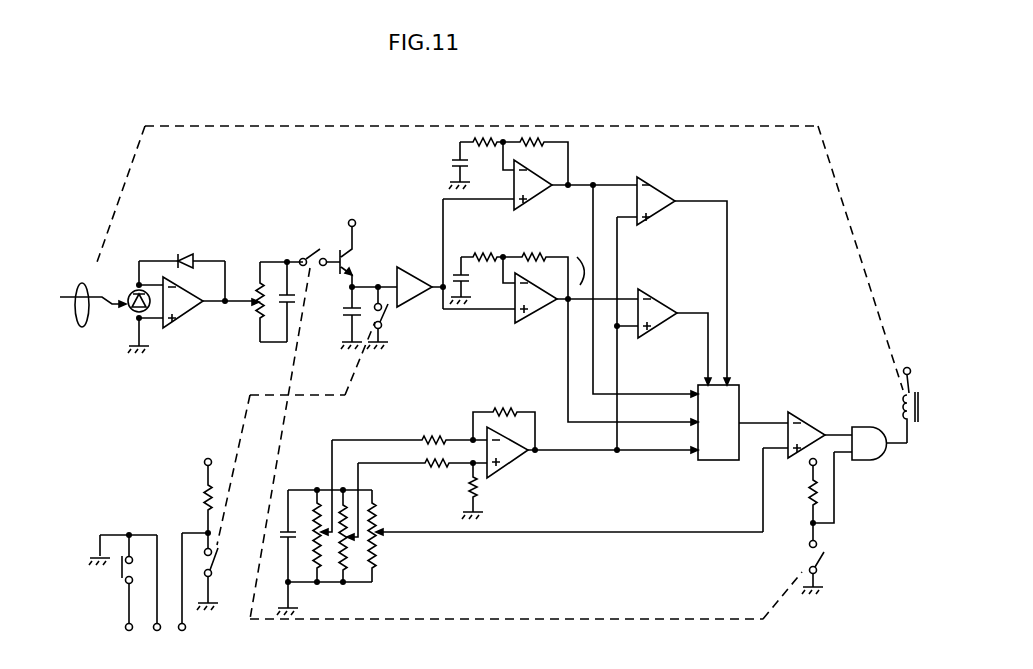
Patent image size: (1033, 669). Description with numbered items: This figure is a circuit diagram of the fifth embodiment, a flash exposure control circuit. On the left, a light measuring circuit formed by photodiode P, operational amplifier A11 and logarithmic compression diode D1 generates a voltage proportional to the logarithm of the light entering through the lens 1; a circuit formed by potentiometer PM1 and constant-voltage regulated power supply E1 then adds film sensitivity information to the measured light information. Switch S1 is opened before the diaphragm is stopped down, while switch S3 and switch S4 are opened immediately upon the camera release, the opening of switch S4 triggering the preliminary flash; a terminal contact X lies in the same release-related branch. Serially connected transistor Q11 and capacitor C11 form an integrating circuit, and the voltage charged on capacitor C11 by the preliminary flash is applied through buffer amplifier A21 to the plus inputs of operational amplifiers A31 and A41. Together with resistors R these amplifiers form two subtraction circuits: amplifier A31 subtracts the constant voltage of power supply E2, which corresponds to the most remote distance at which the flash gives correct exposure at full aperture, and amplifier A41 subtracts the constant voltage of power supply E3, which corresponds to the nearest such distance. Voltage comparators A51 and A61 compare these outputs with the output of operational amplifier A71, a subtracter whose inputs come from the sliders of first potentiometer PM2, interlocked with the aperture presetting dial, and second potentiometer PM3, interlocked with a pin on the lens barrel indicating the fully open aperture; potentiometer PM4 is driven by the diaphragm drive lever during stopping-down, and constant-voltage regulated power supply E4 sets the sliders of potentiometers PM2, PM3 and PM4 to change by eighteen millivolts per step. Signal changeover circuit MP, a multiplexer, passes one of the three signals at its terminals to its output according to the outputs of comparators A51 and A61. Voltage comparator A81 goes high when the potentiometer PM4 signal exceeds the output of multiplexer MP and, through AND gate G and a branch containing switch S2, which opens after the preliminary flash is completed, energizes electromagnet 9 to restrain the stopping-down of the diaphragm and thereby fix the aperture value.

The lens 1 is at (93, 297).
The photodiode P is at (132, 313).
The logarithmic compression diode D1 is at (185, 254).
The operational amplifier A11 is at (184, 318).
The potentiometer PM1 is at (256, 314).
The constant-voltage regulated power supply E1 is at (290, 303).
The switch S1 is at (313, 252).
The transistor Q11 is at (355, 256).
The capacitor C11 is at (347, 318).
The switch S3 is at (384, 316).
The buffer amplifier A21 is at (421, 298).
The power supply E2 is at (452, 163).
The power supply E3 is at (467, 283).
The resistors R is at (489, 497).
The operational amplifier A31 is at (546, 189).
The operational amplifier A41 is at (530, 318).
The voltage comparator A51 is at (657, 213).
The voltage comparator A61 is at (668, 318).
The signal changeover circuit (multiplexer) MP is at (663, 338).
The operational amplifier A71 is at (510, 468).
The voltage comparator A81 is at (807, 402).
The AND gate G is at (865, 427).
The electromagnet 9 is at (920, 417).
The switch S2 is at (817, 543).
The constant-voltage regulated power supply E4 is at (283, 537).
The first potentiometer PM2 is at (328, 533).
The second potentiometer PM3 is at (350, 548).
The potentiometer PM4 is at (375, 541).
The switch S4 is at (212, 561).
The switch X is at (122, 573).